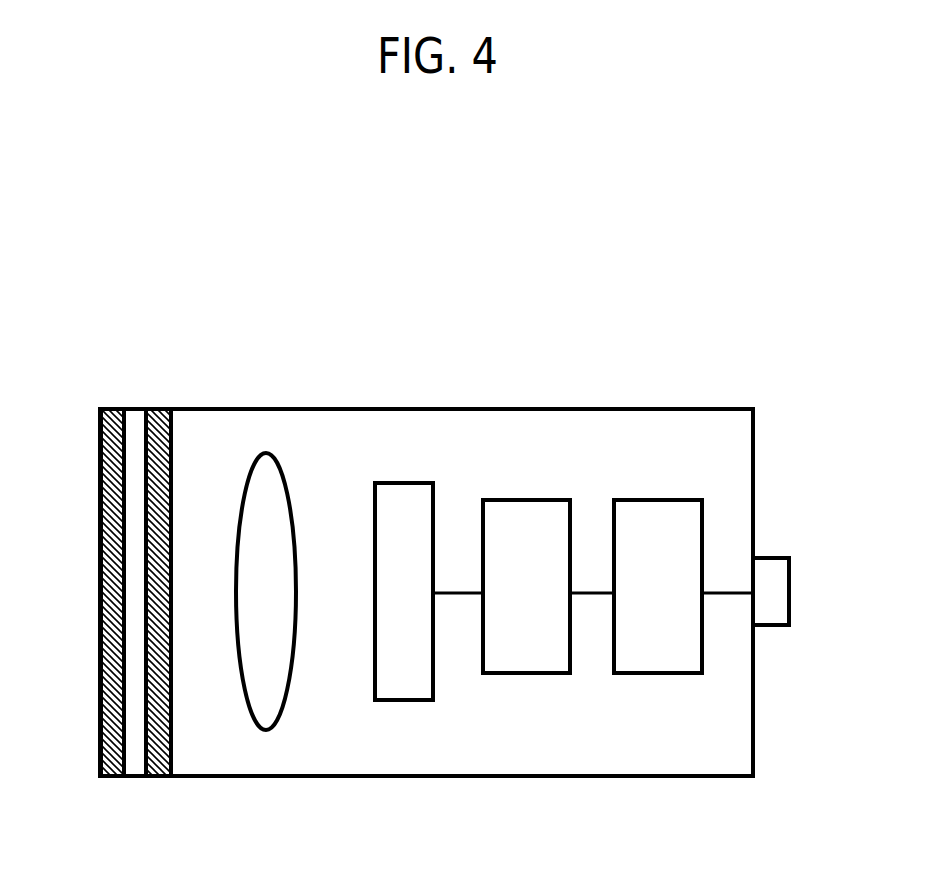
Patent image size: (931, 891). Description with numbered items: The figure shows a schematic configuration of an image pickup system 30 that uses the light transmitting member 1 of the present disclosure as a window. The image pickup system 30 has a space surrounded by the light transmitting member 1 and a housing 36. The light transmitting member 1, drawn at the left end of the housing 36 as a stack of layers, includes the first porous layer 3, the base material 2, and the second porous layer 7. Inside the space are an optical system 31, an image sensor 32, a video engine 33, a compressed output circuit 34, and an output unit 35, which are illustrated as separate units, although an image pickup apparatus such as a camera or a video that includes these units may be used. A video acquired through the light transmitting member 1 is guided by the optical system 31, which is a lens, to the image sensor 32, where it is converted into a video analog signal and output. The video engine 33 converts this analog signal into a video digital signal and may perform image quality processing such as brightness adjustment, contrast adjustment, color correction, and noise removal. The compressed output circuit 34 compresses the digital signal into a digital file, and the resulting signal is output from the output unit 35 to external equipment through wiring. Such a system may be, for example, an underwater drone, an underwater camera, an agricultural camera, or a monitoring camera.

The light transmitting member 1 is at (206, 328).
The base material 2 is at (130, 420).
The first porous layer 3 is at (110, 417).
The second porous layer 7 is at (160, 418).
The image pickup system 30 is at (445, 202).
The optical system 31 is at (268, 472).
The image sensor 32 is at (403, 505).
The video engine 33 is at (519, 512).
The compressed output circuit 34 is at (652, 512).
The output unit 35 is at (767, 572).
The housing 36 is at (399, 762).